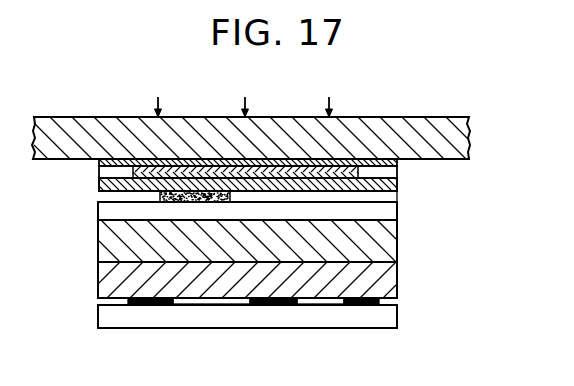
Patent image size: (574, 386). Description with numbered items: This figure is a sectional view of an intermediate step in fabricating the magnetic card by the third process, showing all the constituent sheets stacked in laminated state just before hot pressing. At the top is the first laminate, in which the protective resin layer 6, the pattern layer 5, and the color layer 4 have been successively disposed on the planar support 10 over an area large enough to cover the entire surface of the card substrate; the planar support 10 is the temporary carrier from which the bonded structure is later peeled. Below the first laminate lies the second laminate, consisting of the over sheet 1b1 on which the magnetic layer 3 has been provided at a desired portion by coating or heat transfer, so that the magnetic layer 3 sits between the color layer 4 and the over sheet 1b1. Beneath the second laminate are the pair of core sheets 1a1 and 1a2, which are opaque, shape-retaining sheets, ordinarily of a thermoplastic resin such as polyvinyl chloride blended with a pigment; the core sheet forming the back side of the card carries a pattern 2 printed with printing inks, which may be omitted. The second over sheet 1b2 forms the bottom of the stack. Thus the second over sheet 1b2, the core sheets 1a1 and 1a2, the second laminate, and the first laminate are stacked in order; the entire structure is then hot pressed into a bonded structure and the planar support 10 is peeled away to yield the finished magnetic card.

The planar support 10 is at (469, 145).
The protective resin layer 6 is at (98, 163).
The pattern layer 5 is at (398, 176).
The color layer 4 is at (397, 191).
The magnetic layer 3 is at (160, 195).
The over sheet 1b1 is at (399, 215).
The core sheet 1a1 is at (399, 245).
The core sheet 1a2 is at (399, 280).
The second over sheet 1b2 is at (399, 318).
The pattern 2 is at (360, 336).